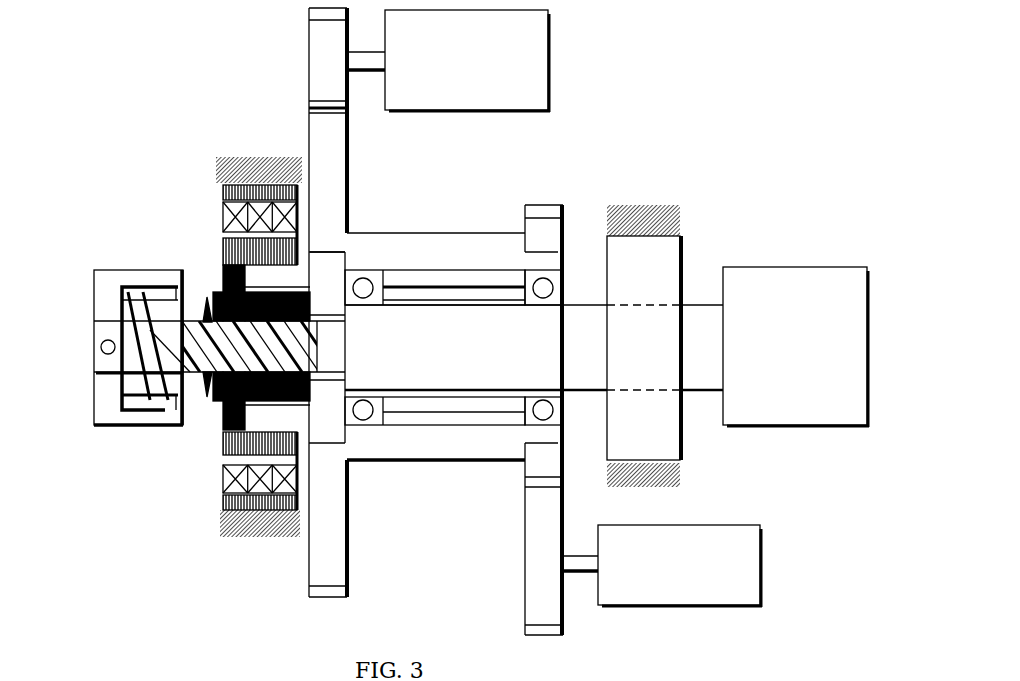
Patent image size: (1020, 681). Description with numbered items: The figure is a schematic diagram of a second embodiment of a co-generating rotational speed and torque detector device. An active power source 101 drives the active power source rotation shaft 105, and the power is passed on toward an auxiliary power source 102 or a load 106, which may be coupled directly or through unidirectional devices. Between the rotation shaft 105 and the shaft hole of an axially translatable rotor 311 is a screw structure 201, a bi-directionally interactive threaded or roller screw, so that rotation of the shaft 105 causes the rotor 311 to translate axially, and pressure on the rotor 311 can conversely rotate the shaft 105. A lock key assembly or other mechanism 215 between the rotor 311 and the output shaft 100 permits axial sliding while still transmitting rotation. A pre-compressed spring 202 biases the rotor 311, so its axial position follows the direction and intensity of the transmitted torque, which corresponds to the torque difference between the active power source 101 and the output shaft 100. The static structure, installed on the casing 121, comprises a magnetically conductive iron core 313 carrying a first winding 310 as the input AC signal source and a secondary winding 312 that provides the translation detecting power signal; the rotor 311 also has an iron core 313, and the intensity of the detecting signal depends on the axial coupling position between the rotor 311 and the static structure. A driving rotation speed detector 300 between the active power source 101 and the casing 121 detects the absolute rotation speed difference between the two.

The output shaft 100 is at (444, 242).
The active power source 101 is at (880, 338).
The auxiliary power source 102 is at (550, 77).
The active power source rotation shaft 105 is at (98, 344).
The load 106 is at (768, 562).
The casing 121 is at (245, 160).
The screw structure 201 is at (203, 385).
The pre-compressed spring 202 is at (118, 356).
The lock key assembly 215 is at (308, 430).
The driving rotation speed detector 300 is at (685, 260).
The first winding 310 is at (245, 538).
The axially translatable rotor 311 is at (222, 270).
The secondary winding 312 is at (222, 484).
The magnetically conductive iron core 313 is at (222, 192).